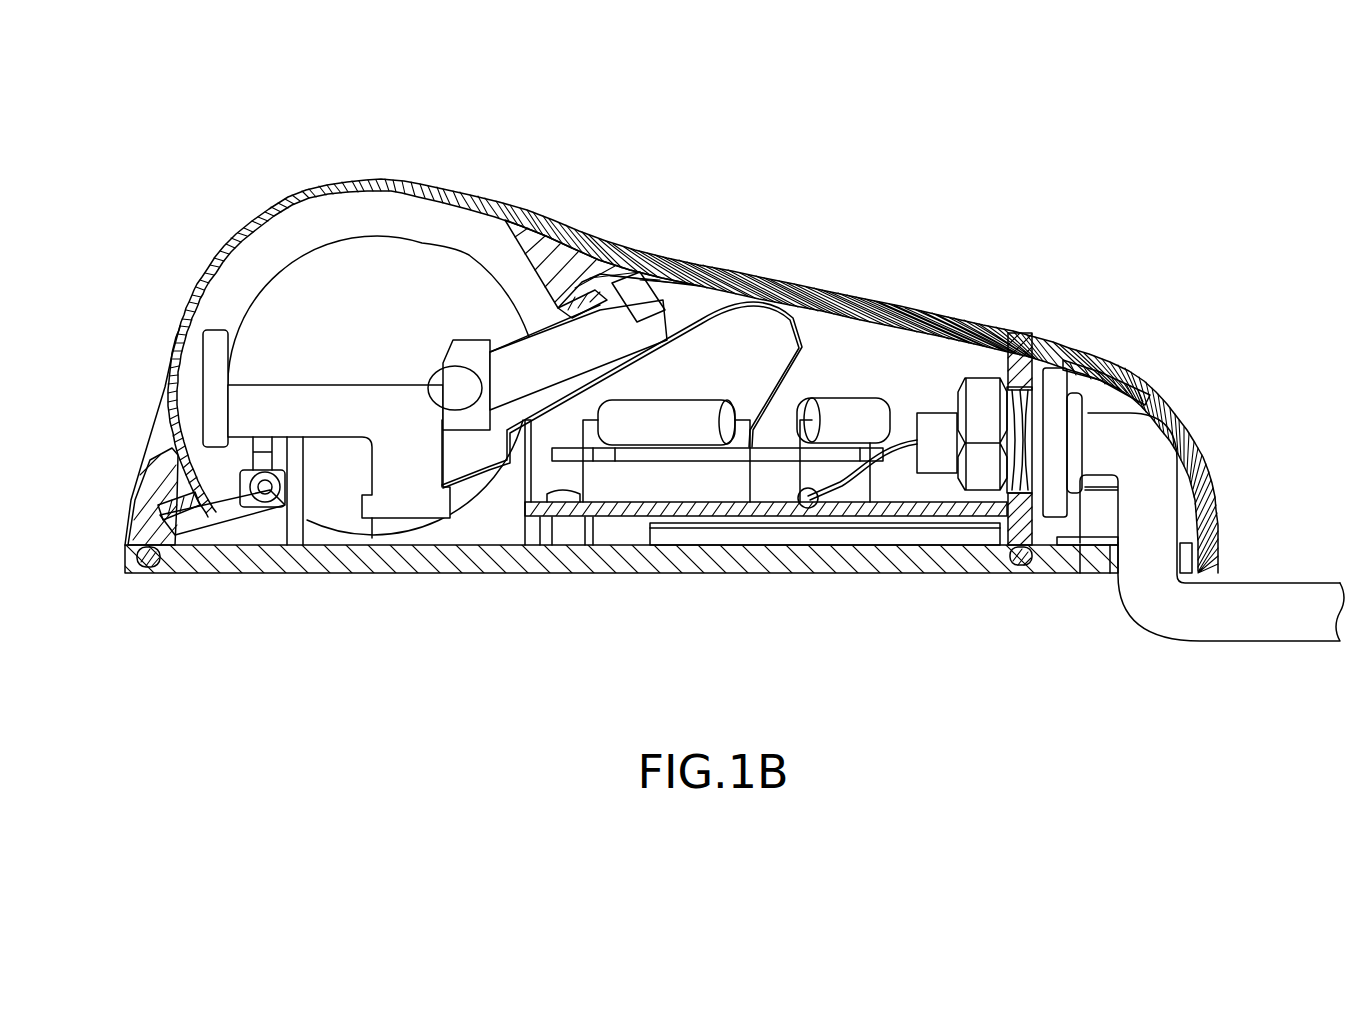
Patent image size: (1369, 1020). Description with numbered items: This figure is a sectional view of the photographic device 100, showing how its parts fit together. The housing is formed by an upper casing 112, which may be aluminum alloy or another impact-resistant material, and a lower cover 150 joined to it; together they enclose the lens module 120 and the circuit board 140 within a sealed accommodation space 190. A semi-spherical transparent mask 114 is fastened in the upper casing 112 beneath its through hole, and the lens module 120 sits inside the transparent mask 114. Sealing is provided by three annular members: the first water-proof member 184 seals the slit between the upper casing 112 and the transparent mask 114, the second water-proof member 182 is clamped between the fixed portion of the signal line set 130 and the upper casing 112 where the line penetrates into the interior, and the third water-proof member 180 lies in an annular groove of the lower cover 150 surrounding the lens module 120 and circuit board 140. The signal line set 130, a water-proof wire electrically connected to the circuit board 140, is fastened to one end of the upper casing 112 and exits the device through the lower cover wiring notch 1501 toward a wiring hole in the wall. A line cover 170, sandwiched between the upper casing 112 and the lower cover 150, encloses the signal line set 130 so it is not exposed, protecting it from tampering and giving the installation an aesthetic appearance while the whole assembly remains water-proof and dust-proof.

The photographic device 100 is at (996, 208).
The upper casing 112 is at (723, 273).
The transparent mask 114 is at (375, 181).
The lens module 120 is at (250, 295).
The signal line set 130 is at (1204, 650).
The circuit board 140 is at (621, 517).
The lower cover 150 is at (765, 572).
The line cover 170 is at (1205, 484).
The third water-proof member 180 is at (150, 567).
The second water-proof member 182 is at (1038, 508).
The first water-proof member 184 is at (180, 500).
The accommodation space 190 is at (908, 350).
The lower cover wiring notch 1501 is at (1117, 583).